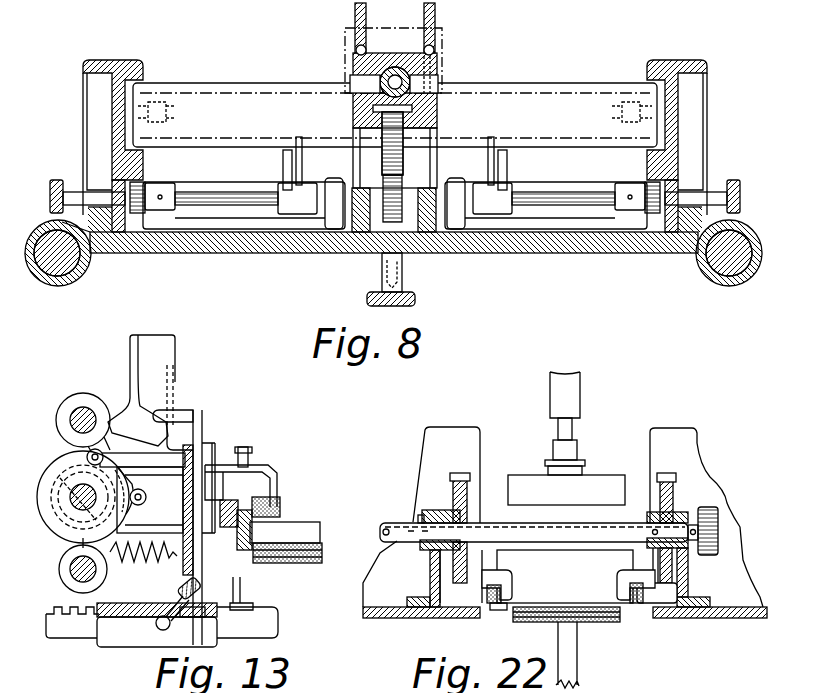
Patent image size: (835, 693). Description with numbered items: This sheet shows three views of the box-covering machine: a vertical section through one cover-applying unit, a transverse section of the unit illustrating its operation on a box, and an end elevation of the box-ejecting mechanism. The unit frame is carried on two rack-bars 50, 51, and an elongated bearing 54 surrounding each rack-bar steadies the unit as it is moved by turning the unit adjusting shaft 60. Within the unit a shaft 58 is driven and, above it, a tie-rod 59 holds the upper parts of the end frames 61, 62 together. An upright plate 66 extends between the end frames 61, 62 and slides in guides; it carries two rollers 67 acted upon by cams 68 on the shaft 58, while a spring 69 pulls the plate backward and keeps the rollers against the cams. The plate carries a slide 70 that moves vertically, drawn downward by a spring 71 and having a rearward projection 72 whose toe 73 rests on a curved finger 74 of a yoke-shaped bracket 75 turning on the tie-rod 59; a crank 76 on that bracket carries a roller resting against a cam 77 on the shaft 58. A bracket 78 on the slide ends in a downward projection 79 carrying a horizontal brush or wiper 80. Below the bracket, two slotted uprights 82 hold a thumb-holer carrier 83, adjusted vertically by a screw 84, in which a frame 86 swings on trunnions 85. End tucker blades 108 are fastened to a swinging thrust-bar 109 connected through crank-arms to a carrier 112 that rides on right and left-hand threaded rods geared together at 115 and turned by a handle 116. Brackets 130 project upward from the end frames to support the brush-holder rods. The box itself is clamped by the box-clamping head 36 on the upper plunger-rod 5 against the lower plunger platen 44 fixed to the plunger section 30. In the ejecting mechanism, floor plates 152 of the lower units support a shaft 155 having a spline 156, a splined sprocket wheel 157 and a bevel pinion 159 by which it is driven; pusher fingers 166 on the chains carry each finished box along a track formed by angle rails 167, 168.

In FIG. 22, the upper plunger-rod 5 is at (574, 404).
In FIG. 22, the second plunger section 30 is at (560, 647).
In FIG. 13, the box-clamping head 36 is at (310, 522).
In FIG. 22, the box-clamping head 36 is at (528, 478).
In FIG. 13, the lower plunger platen 44 is at (262, 566).
In FIG. 22, the lower plunger platen 44 is at (604, 625).
In FIG. 8, the rack-bar 50 is at (722, 265).
In FIG. 8, the rack-bar 51 is at (80, 268).
In FIG. 13, the rack-bar 51 is at (162, 625).
In FIG. 8, the elongated bearing 54 is at (62, 285).
In FIG. 13, the shaft 58 is at (64, 498).
In FIG. 13, the tie-rod 59 is at (70, 418).
In FIG. 13, the unit adjusting shaft 60 is at (68, 572).
In FIG. 8, the end frame 61 is at (92, 96).
In FIG. 8, the end frame 62 is at (688, 104).
In FIG. 8, the upright plate 66 is at (298, 86).
In FIG. 13, the upright plate 66 is at (190, 516).
In FIG. 8, the rollers 67 is at (152, 107).
In FIG. 13, the rollers 67 is at (147, 494).
In FIG. 13, the cams 68 is at (60, 516).
In FIG. 13, the spring 69 is at (126, 564).
In FIG. 13, the slide 70 is at (206, 438).
In FIG. 13, the spring 71 is at (182, 586).
In FIG. 13, the rearward projection 72 is at (188, 428).
In FIG. 13, the toe 73 is at (170, 420).
In FIG. 13, the finger 74 is at (130, 398).
In FIG. 13, the yoke-shaped bracket 75 is at (76, 394).
In FIG. 13, the crank 76 is at (104, 453).
In FIG. 13, the cam 77 is at (56, 472).
In FIG. 13, the bracket 78 is at (250, 458).
In FIG. 13, the downward projection 79 is at (278, 482).
In FIG. 13, the brush or wiper 80 is at (266, 500).
In FIG. 8, the slotted uprights 82 is at (354, 14).
In FIG. 8, the thumb-holer carrier 83 is at (354, 106).
In FIG. 8, the screw 84 is at (382, 271).
In FIG. 8, the trunnions 85 is at (438, 76).
In FIG. 8, the frame 86 is at (399, 66).
In FIG. 8, the end tucker blades 108 is at (302, 160).
In FIG. 8, the thrust-bar 109 is at (285, 168).
In FIG. 8, the carrier 112 is at (292, 188).
In FIG. 8, the gearing 115 is at (138, 188).
In FIG. 8, the handle 116 is at (84, 198).
In FIG. 13, the brackets 130 is at (150, 340).
In FIG. 22, the floor plates 152 is at (412, 616).
In FIG. 22, the shaft 155 is at (390, 522).
In FIG. 22, the spline 156 is at (524, 526).
In FIG. 22, the sprocket wheel 157 is at (460, 477).
In FIG. 22, the bevel pinion 159 is at (720, 520).
In FIG. 22, the pusher fingers 166 is at (510, 582).
In FIG. 13, the angle rail 167 is at (241, 594).
In FIG. 22, the angle rail 167 is at (498, 612).
In FIG. 22, the angle rail 168 is at (636, 605).